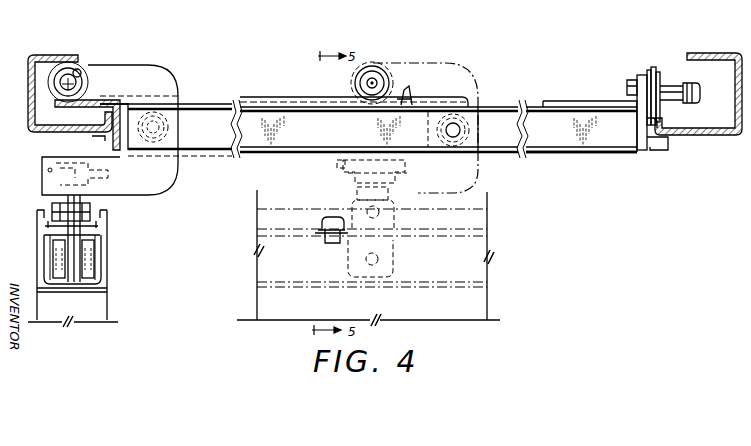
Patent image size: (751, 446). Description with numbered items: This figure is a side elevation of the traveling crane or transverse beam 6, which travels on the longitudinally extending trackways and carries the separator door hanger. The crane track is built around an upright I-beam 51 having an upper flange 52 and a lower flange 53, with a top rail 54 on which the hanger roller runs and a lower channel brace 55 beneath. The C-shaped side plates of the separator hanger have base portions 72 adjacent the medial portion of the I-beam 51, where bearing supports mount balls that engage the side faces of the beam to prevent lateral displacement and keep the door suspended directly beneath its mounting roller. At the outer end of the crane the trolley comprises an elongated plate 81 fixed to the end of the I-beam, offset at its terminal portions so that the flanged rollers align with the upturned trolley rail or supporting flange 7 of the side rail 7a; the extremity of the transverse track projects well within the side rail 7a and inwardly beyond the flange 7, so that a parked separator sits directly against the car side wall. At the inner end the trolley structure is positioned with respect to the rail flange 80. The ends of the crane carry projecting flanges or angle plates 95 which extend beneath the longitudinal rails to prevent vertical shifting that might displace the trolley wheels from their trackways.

The side rail 7a is at (27, 88).
The trolley rail or supporting flange 7 is at (96, 110).
The elongated plate 81 is at (127, 112).
The projecting flanges or angle plates 95 is at (100, 138).
The top rail 54 is at (272, 97).
The transverse beam or crane 6 is at (250, 140).
The lower channel brace 55 is at (340, 158).
The base portions 72 is at (478, 143).
The upper flange 52 is at (490, 108).
The lower flange 53 is at (497, 151).
The upright I-beam 51 is at (580, 140).
The rail flange 80 is at (662, 128).